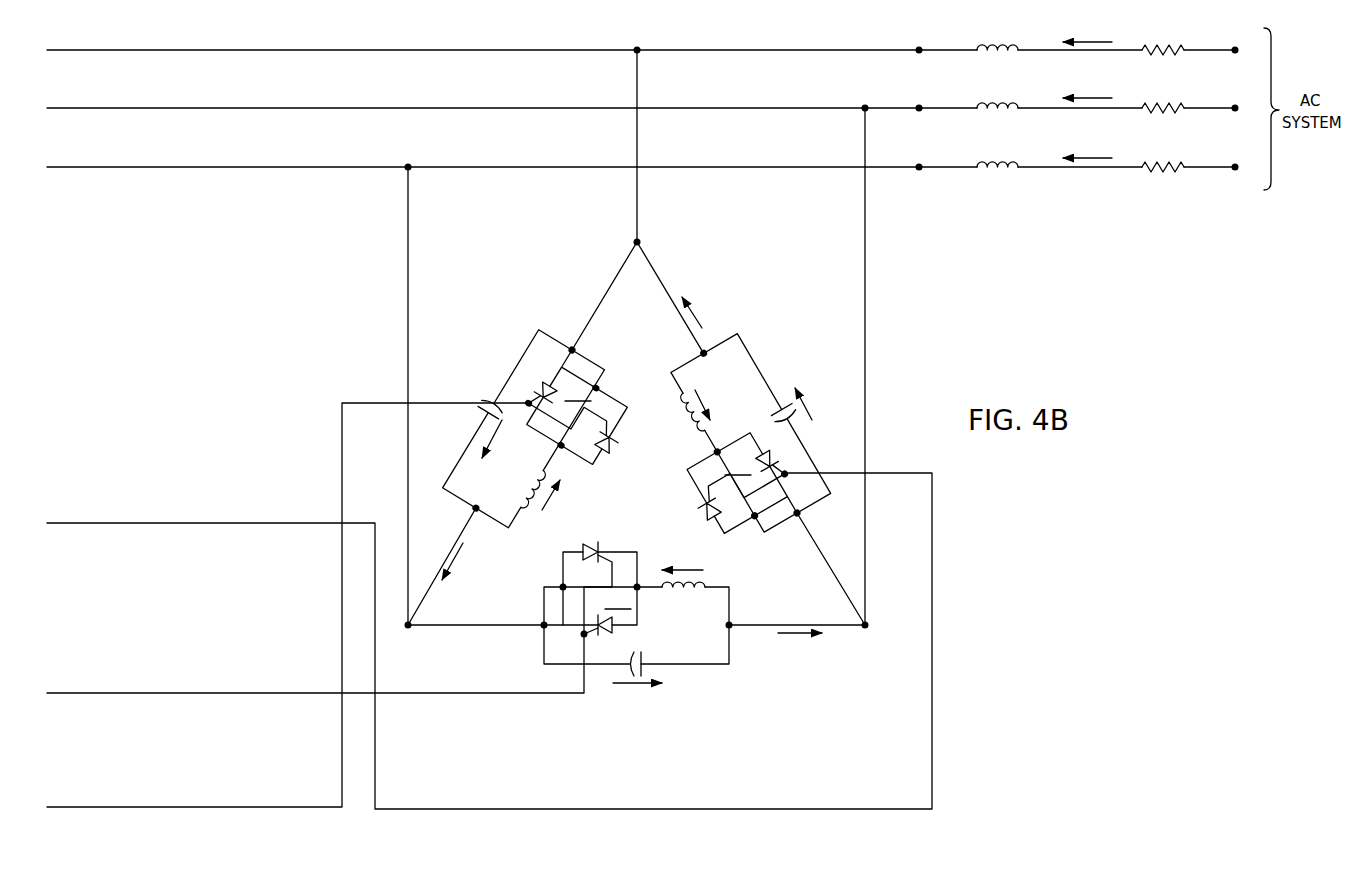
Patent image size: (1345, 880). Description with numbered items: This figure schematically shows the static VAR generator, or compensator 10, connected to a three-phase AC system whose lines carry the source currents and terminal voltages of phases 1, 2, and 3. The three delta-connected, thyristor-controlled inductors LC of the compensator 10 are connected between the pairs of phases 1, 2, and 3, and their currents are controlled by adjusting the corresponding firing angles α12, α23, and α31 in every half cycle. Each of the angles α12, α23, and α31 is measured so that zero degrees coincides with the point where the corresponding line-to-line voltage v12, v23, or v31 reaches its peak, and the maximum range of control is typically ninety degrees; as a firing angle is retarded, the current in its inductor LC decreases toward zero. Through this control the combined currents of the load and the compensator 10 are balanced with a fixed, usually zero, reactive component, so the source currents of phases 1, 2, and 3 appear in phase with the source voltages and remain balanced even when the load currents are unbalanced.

The static VAR generator 10 is at (613, 836).
The compensator branch between phases 1 and 2 12 is at (489, 567).
The compensator branch between phases 2 and 3 23 is at (390, 627).
The compensator branch between phases 3 and 1 31 is at (348, 564).
The AC system phase 1 is at (654, 49).
The AC system phase 2 is at (654, 105).
The AC system phase 3 is at (654, 167).